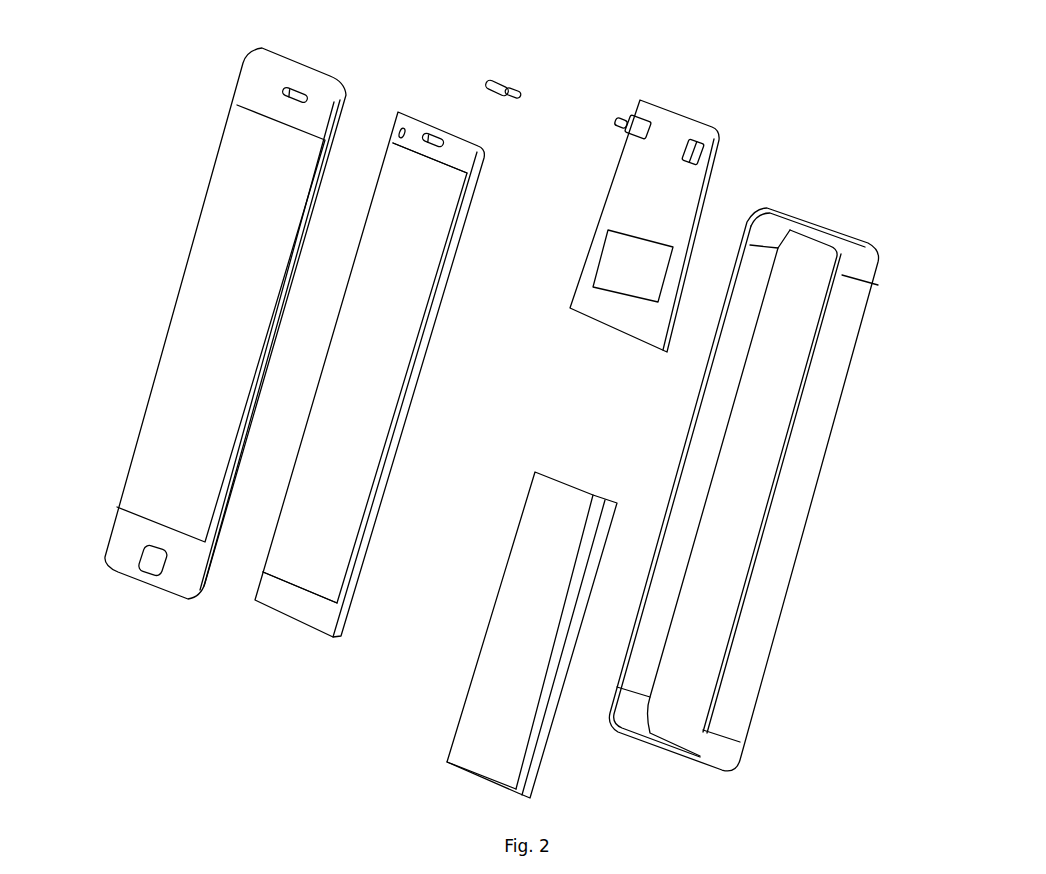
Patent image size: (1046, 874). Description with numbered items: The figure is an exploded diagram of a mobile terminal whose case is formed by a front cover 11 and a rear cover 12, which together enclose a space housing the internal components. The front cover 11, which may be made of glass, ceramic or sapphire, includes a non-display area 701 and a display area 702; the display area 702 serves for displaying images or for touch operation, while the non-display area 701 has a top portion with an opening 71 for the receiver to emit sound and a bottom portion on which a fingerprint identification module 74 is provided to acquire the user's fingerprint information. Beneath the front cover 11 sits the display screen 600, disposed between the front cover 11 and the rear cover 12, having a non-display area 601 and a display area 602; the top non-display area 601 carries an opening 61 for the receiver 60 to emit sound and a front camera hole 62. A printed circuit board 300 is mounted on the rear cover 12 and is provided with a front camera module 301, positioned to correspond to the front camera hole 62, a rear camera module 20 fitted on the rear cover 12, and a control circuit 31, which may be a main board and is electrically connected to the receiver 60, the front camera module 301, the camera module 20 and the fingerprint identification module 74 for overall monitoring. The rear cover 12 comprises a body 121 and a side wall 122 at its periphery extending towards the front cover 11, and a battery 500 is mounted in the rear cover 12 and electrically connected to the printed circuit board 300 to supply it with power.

The front cover 11 is at (338, 60).
The non-display area 701 is at (322, 108).
The display area 702 is at (210, 213).
The opening 71 is at (297, 90).
The fingerprint identification module 74 is at (147, 563).
The display screen 600 is at (436, 113).
The non-display area 601 is at (463, 152).
The display area 602 is at (430, 282).
The opening 61 is at (442, 146).
The front camera hole 62 is at (400, 126).
The receiver 60 is at (507, 87).
The printed circuit board 300 is at (695, 112).
The front camera module 301 is at (633, 118).
The camera module 20 is at (705, 153).
The control circuit 31 is at (595, 268).
The rear cover 12 is at (874, 230).
The body 121 is at (780, 437).
The side wall 122 is at (846, 322).
The battery 500 is at (593, 494).